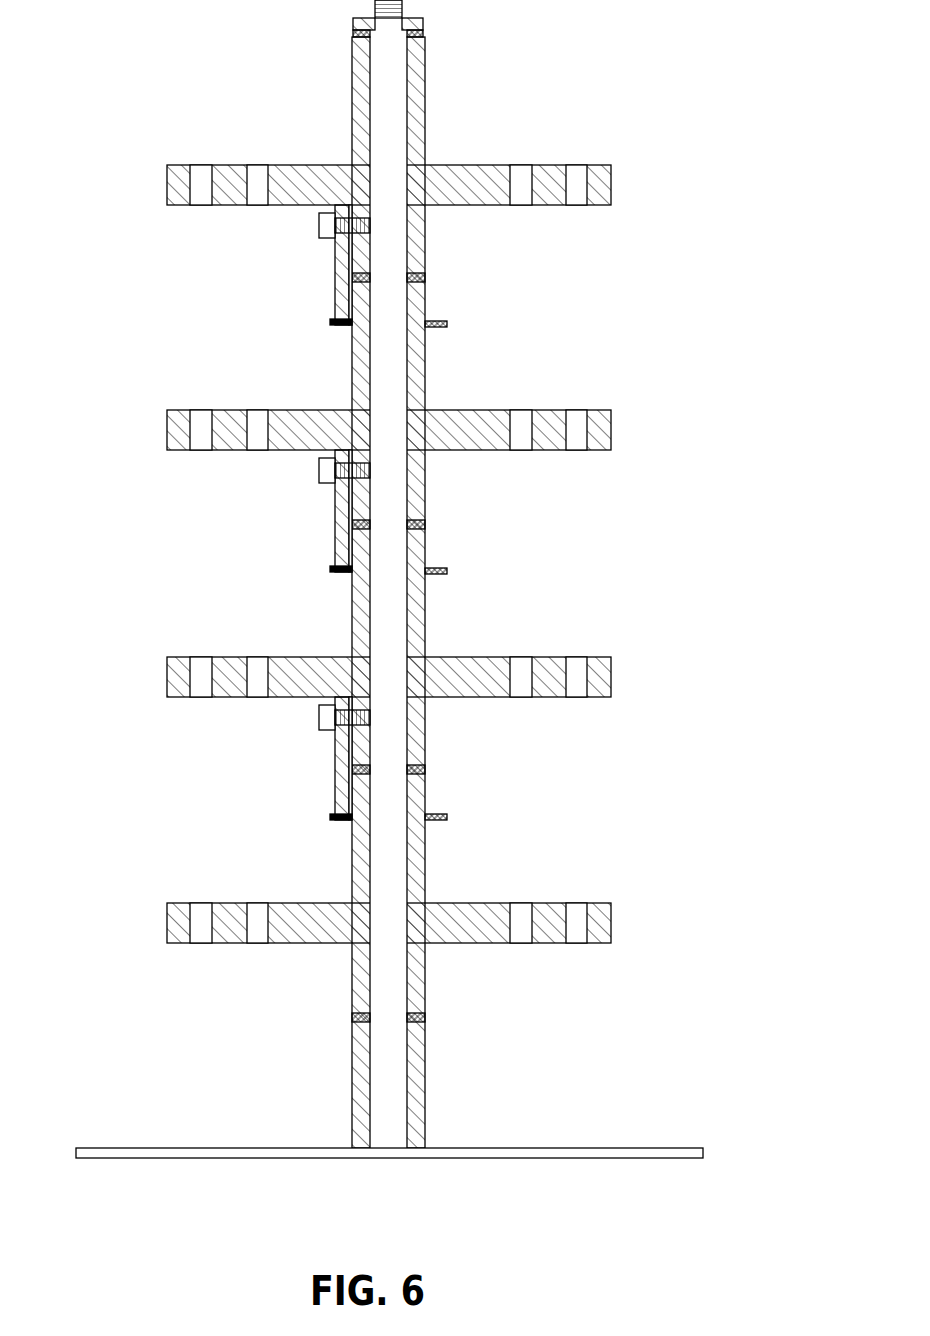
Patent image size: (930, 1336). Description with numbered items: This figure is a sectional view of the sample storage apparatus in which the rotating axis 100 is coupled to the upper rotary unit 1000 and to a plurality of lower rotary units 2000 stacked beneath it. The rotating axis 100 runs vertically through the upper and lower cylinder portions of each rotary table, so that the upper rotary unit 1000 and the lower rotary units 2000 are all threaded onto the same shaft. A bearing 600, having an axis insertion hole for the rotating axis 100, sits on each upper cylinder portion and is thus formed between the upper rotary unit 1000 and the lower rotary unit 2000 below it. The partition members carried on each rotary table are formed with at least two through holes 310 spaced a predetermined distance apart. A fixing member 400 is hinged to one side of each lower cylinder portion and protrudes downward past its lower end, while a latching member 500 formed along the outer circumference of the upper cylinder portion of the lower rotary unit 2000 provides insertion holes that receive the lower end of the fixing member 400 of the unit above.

The rotating axis 100 is at (383, 107).
The through holes 310 is at (582, 173).
The fixing member 400 is at (335, 267).
The latching member 500 is at (447, 322).
The bearing 600 is at (425, 520).
The upper rotary unit 1000 is at (379, 579).
The lower rotary unit 2000 is at (198, 397).